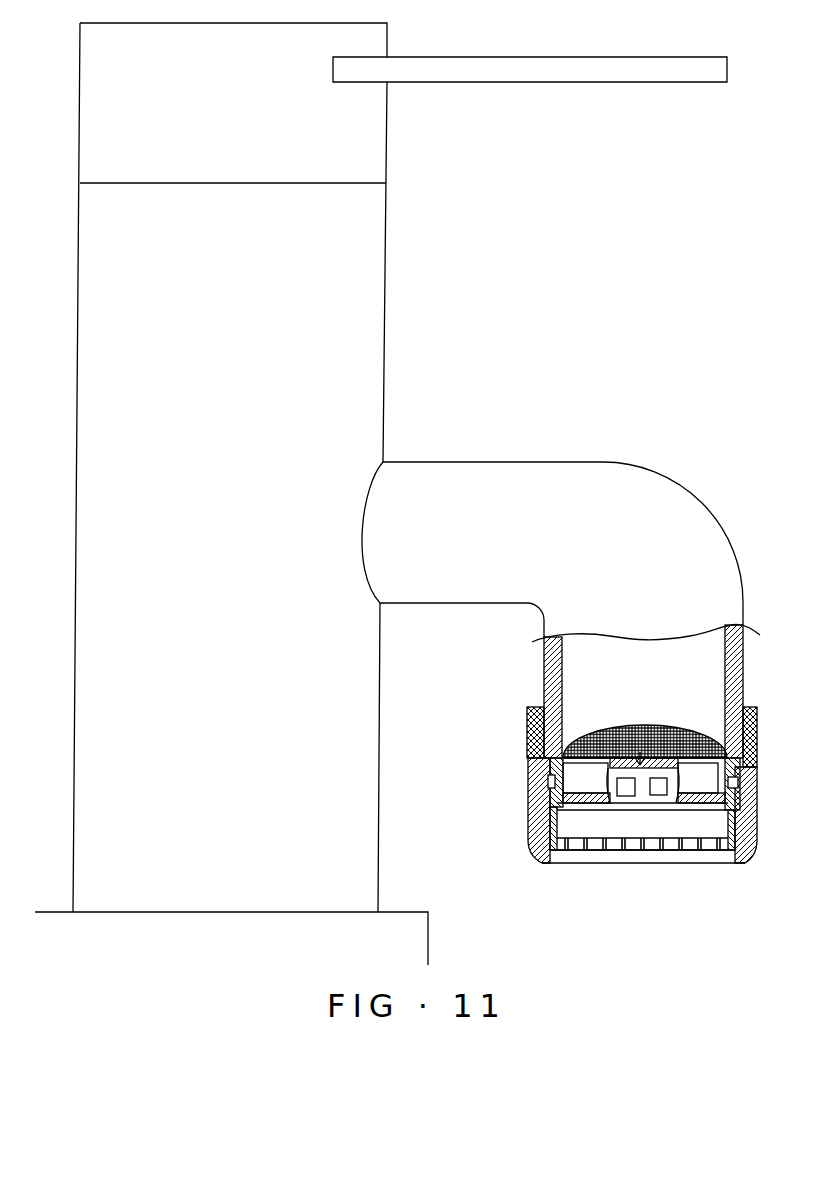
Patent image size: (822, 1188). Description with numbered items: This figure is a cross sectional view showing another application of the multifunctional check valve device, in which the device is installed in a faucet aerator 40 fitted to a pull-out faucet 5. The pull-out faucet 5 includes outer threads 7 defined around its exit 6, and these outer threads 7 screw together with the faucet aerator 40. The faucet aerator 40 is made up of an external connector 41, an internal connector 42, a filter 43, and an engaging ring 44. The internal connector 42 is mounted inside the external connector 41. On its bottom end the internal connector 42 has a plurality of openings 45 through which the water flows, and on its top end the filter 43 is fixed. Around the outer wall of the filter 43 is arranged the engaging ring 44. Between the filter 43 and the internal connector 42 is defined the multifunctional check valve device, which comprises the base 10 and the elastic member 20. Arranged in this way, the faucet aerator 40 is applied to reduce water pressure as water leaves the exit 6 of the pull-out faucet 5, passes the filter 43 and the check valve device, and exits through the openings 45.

The pull-out faucet 5 is at (643, 447).
The exit 6 is at (670, 687).
The outer threads 7 is at (543, 718).
The base 10 is at (700, 806).
The elastic member 20 is at (660, 725).
The faucet aerator 40 is at (530, 856).
The external connector 41 is at (530, 822).
The internal connector 42 is at (543, 805).
The filter 43 is at (633, 726).
The engaging ring 44 is at (557, 762).
The openings 45 is at (628, 846).